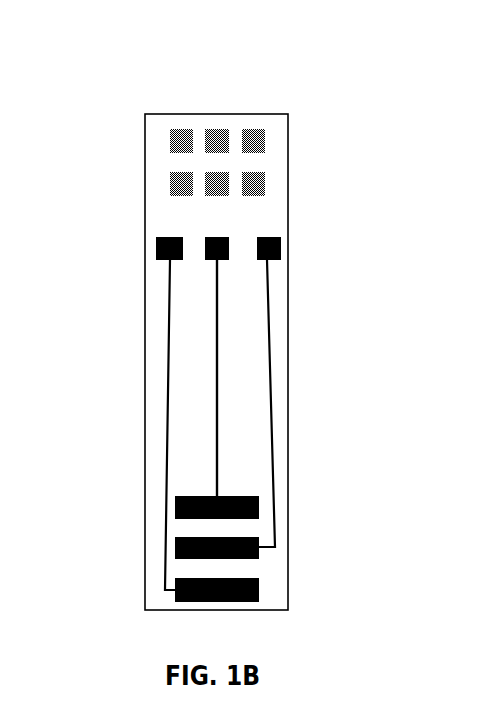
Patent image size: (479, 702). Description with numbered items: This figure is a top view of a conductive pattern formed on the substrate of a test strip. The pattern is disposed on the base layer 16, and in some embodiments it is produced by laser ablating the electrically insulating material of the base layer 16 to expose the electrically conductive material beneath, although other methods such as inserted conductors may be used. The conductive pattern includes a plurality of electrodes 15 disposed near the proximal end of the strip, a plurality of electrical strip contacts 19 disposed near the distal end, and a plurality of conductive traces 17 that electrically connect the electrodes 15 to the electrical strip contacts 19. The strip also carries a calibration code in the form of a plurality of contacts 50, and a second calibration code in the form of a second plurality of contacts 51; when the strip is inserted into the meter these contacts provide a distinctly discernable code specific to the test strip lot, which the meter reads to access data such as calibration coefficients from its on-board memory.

The electrodes 15 is at (277, 559).
The base layer 16 is at (289, 300).
The conductive traces 17 is at (280, 362).
The electrical strip contacts 19 is at (259, 226).
The plurality of contacts 50 is at (180, 130).
The second plurality of contacts 51 is at (250, 197).